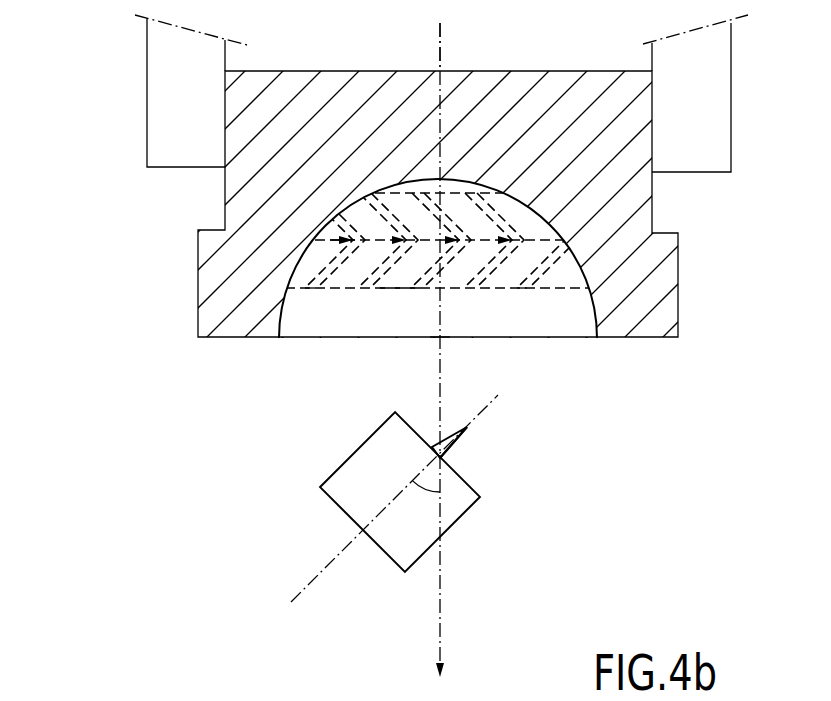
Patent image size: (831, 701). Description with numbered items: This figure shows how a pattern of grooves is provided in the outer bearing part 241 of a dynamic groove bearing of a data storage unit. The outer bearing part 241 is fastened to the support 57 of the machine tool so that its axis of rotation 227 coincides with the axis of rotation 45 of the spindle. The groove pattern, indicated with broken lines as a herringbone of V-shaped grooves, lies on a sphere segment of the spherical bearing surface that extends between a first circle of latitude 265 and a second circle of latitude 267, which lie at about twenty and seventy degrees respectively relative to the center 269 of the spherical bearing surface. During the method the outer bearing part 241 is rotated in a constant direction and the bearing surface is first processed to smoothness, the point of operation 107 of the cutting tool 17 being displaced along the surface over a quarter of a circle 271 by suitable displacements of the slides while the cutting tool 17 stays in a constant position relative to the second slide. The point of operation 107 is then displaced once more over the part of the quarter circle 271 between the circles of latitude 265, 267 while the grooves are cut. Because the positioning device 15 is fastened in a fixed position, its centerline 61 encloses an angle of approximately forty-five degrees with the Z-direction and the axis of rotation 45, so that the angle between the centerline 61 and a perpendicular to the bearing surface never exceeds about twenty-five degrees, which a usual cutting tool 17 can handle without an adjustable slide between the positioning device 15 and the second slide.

The positioning device 15 is at (397, 548).
The cutting tool 17 is at (453, 447).
The axis of rotation of the spindle 45 is at (441, 42).
The support 57 is at (158, 114).
The centerline of the positioning device 61 is at (488, 407).
The point of operation 107 is at (466, 428).
The axis of rotation 227 is at (441, 365).
The outer bearing part 241 is at (662, 305).
The first circle of latitude 265 is at (403, 288).
The second circle of latitude 267 is at (453, 194).
The center of the spherical bearing surface 269 is at (439, 340).
The quarter of a circle 271 is at (537, 210).